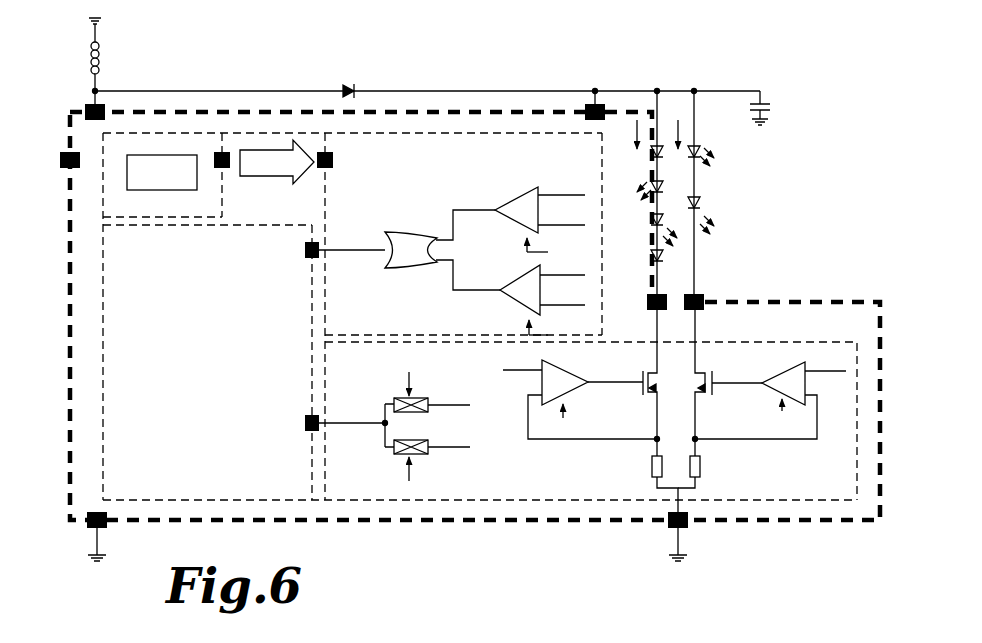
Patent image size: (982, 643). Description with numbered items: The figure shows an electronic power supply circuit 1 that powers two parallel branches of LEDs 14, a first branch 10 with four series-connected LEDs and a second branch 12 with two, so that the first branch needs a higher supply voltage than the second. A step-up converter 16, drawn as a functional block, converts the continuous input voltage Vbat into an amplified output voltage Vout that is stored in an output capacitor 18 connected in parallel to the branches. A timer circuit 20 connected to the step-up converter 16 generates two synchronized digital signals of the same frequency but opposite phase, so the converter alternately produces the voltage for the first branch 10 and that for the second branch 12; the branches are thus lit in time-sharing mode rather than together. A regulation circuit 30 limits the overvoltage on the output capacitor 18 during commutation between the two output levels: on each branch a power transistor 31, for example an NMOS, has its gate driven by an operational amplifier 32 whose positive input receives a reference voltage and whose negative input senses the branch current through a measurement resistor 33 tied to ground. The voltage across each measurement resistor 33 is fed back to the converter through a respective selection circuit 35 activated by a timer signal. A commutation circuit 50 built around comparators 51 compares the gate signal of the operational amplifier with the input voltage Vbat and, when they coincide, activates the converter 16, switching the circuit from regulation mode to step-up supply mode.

The electronic power supply circuit 1 is at (252, 108).
The first branch 10 is at (677, 186).
The second branch 12 is at (711, 202).
The LEDs 14 is at (645, 155).
The step-up converter 16 is at (100, 346).
The output capacitor 18 is at (788, 100).
The timer circuit 20 is at (162, 129).
The regulation circuit 30 is at (548, 503).
The power transistor 31 is at (718, 396).
The operational amplifier 32 is at (785, 364).
The measurement resistor 33 is at (703, 466).
The selection circuit 35 is at (402, 457).
The commutation circuit 50 is at (389, 131).
The comparator 51 is at (514, 194).